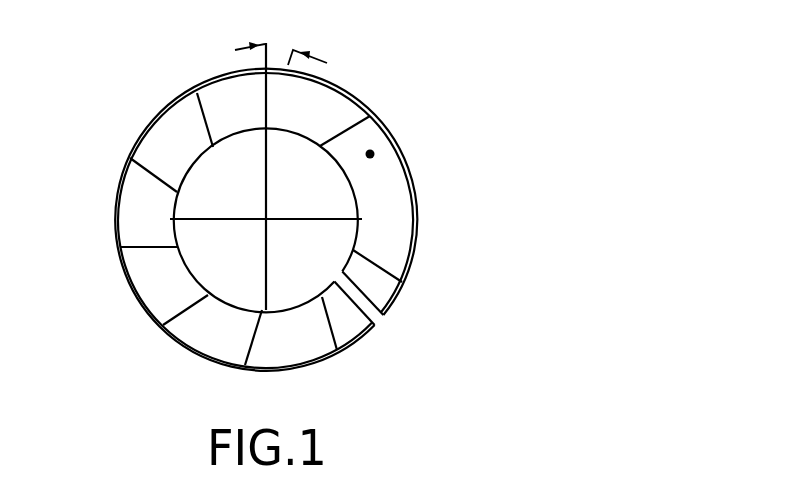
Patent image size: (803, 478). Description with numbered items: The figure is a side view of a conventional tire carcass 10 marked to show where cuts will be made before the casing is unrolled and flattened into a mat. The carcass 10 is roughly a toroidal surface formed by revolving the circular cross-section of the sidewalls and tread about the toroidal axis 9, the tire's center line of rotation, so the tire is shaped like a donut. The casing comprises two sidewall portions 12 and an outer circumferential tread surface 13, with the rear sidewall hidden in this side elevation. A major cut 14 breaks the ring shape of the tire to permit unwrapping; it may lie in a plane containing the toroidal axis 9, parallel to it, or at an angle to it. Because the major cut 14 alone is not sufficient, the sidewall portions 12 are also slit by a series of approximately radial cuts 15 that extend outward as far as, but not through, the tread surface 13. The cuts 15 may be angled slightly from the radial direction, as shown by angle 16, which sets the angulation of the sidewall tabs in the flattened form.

The toroidal axis 9 is at (266, 200).
The tire carcass 10 is at (200, 191).
The sidewall portions 12 is at (426, 120).
The tread surface 13 is at (293, 197).
The major cut 14 is at (412, 327).
The radial cuts 15 is at (222, 229).
The angle 16 is at (283, 156).